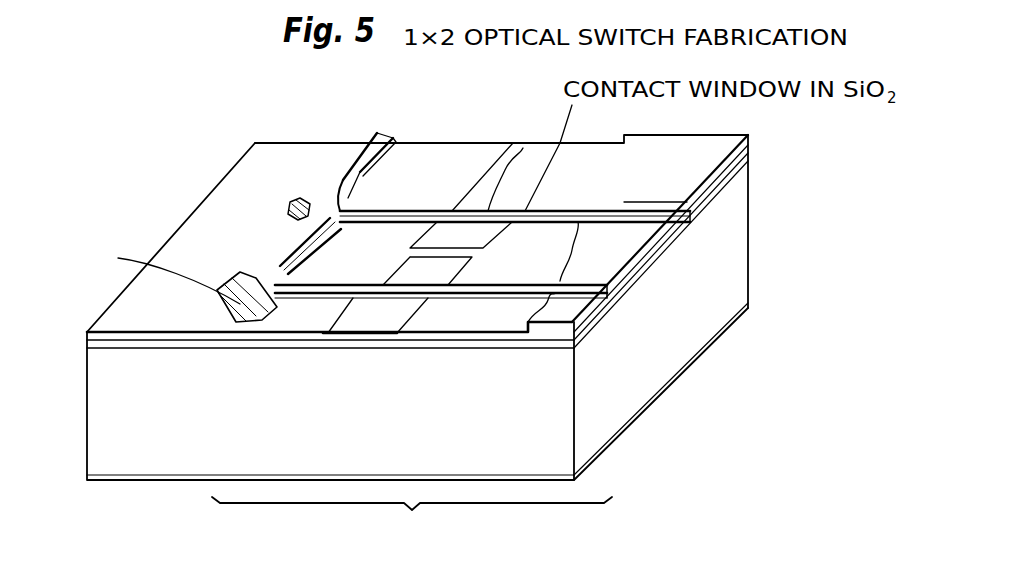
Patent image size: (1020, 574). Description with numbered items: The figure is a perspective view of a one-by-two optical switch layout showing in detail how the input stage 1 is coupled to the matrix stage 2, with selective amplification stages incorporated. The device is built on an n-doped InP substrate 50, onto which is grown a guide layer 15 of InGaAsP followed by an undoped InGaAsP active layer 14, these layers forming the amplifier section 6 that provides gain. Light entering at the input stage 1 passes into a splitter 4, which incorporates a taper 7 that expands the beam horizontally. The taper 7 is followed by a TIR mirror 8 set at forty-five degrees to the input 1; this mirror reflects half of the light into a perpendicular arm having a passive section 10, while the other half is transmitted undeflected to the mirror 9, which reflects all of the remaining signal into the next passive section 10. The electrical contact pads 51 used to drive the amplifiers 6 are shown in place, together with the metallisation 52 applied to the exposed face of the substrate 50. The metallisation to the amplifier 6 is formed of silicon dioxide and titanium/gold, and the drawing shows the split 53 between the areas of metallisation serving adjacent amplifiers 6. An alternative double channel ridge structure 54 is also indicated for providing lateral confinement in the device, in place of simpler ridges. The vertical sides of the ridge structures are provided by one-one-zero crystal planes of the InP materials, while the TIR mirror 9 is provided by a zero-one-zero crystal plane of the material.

The input stage 1 is at (395, 126).
The matrix stage 2 is at (412, 519).
The splitter 4 is at (288, 210).
The amplifier section 6 is at (452, 210).
The taper 7 is at (333, 182).
The TIR mirror 8 is at (290, 200).
The mirror 9 is at (257, 273).
The passive section 10 is at (403, 210).
The active layer 14 is at (374, 342).
The guide layer 15 is at (627, 308).
The InP substrate 50 is at (514, 443).
The electrical contact pads 51 is at (525, 148).
The metallisation 52 is at (648, 395).
The split 53 is at (467, 248).
The double channel ridge structure 54 is at (605, 263).